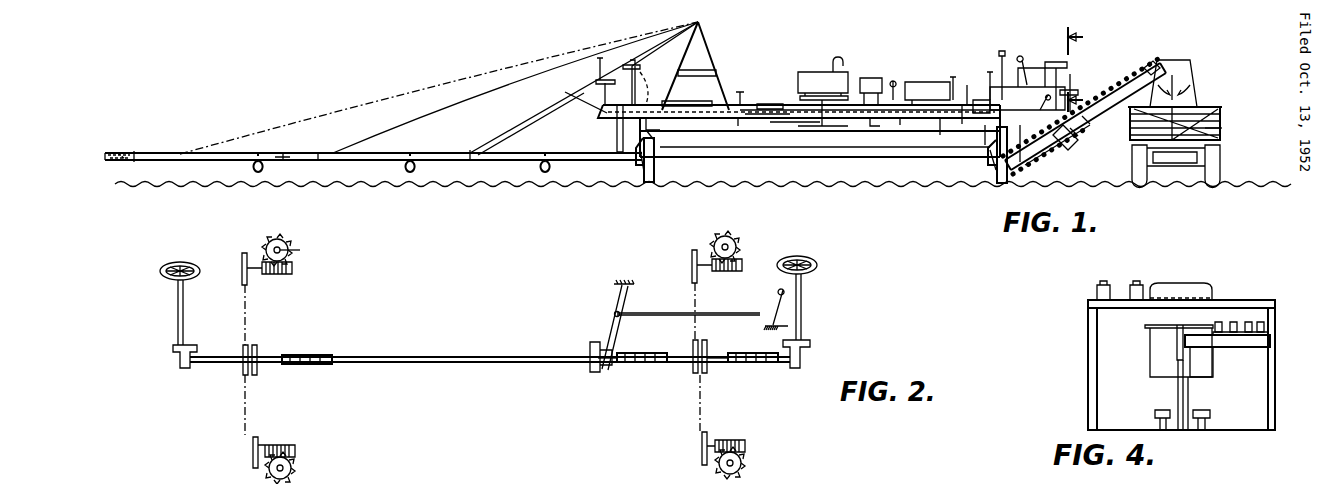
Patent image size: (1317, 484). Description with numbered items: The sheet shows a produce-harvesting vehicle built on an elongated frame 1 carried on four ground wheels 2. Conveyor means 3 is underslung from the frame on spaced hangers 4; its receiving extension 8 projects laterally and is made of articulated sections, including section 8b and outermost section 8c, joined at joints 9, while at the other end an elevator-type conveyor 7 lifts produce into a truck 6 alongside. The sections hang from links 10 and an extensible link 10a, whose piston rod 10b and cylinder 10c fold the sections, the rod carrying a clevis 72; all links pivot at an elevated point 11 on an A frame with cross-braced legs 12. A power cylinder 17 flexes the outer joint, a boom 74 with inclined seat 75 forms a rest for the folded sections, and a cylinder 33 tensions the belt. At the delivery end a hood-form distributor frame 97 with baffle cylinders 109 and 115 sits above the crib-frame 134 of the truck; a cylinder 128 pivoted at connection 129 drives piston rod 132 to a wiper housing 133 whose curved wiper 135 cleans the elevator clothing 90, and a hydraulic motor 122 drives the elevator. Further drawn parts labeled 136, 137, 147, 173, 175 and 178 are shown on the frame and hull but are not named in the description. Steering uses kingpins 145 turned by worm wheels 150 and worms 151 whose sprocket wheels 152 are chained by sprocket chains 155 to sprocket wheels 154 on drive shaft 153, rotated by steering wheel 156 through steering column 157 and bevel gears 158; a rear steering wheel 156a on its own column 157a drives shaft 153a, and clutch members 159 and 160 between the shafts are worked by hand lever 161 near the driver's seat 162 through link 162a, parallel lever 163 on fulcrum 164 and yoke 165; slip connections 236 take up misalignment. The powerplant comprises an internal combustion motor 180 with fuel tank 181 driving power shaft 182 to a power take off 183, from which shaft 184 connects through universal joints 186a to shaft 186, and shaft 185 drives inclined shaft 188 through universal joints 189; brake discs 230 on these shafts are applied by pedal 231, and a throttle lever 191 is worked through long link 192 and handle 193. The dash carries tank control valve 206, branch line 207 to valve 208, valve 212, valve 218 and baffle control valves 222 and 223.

In FIG. 1, the frame 1 is at (706, 157).
In FIG. 1, the ground wheels 2 is at (655, 165).
In FIG. 1, the conveyor means 3 is at (853, 158).
In FIG. 1, the hangers 4 is at (606, 118).
In FIG. 1, the truck 6 is at (1224, 111).
In FIG. 1, the elevator-type conveyor 7 is at (1112, 97).
In FIG. 1, the receiving extension 8 is at (440, 153).
In FIG. 1, the conveyor section 8b is at (326, 161).
In FIG. 1, the outermost section 8c is at (162, 158).
In FIG. 1, the joints 9 is at (266, 154).
In FIG. 1, the stays or links 10 is at (482, 107).
In FIG. 1, the extensible link 10a is at (556, 109).
In FIG. 1, the piston rod 10b is at (520, 131).
In FIG. 1, the cylinder 10c is at (647, 46).
In FIG. 1, the elevated point 11 is at (700, 22).
In FIG. 1, the legs of A frame 12 is at (676, 74).
In FIG. 1, the power cylinder 17 is at (282, 160).
In FIG. 1, the cylinder 33 is at (130, 152).
In FIG. 1, the clevis 72 is at (484, 151).
In FIG. 1, the boom 74 is at (582, 103).
In FIG. 1, the inclined seat 75 is at (580, 96).
In FIG. 1, the clothing 90 is at (1022, 165).
In FIG. 1, the distributor frame 97 is at (1188, 98).
In FIG. 1, the fluid operated cylinder 109 is at (1178, 63).
In FIG. 1, the fluid operated cylinders 115 is at (1222, 127).
In FIG. 1, the motor 122 is at (1148, 63).
In FIG. 1, the fluid-operated cylinder 128 is at (1056, 142).
In FIG. 1, the pivotal connection 129 is at (1027, 86).
In FIG. 1, the piston-rod 132 is at (1073, 150).
In FIG. 1, the wiper-housing 133 is at (1082, 138).
In FIG. 1, the crib-frame 134 is at (1208, 103).
In FIG. 1, the wiper 135 is at (1091, 126).
In FIG. 1, the support 136 is at (940, 140).
In FIG. 1, the bracket 137 is at (656, 126).
In FIG. 2, the king-pin 145 is at (292, 254).
In FIG. 1, the pontoon bracket 147 is at (644, 172).
In FIG. 2, the worm-wheel 150 is at (289, 242).
In FIG. 2, the worm 151 is at (280, 274).
In FIG. 2, the sprocket wheels 152 is at (241, 284).
In FIG. 2, the drive shaft 153 is at (258, 348).
In FIG. 1, the shaft 153a is at (772, 122).
In FIG. 2, the shaft 153a is at (411, 362).
In FIG. 2, the sprocket wheels 154 is at (240, 372).
In FIG. 2, the sprocket chains 155 is at (244, 308).
In FIG. 1, the steering wheel 156 is at (1056, 62).
In FIG. 2, the steering wheel 156 is at (800, 249).
In FIG. 4, the steering wheel 156 is at (1145, 318).
In FIG. 1, the steering wheel 156a is at (630, 64).
In FIG. 2, the steering wheel 156a is at (184, 257).
In FIG. 1, the steering column 157 is at (1072, 78).
In FIG. 2, the steering column 157 is at (803, 311).
In FIG. 4, the steering column 157 is at (1176, 348).
In FIG. 2, the wheel shaft 157a is at (177, 310).
In FIG. 2, the bevel gears 158 is at (802, 361).
In FIG. 1, the clutch member 159 is at (962, 124).
In FIG. 2, the clutch member 159 is at (596, 371).
In FIG. 2, the clutch member 160 is at (612, 372).
In FIG. 1, the hand lever 161 is at (1040, 112).
In FIG. 2, the hand lever 161 is at (786, 304).
In FIG. 1, the driver's seat 162 is at (1001, 52).
In FIG. 4, the driver's seat 162 is at (1176, 338).
In FIG. 2, the link 162a is at (752, 348).
In FIG. 2, the parallel lever 163 is at (612, 315).
In FIG. 2, the fulcrum 164 is at (618, 278).
In FIG. 2, the yoke 165 is at (612, 322).
In FIG. 1, the post 173 is at (616, 140).
In FIG. 1, the post 175 is at (982, 150).
In FIG. 1, the post 178 is at (640, 70).
In FIG. 1, the internal combustion motor 180 is at (927, 82).
In FIG. 1, the fuel tank 181 is at (871, 78).
In FIG. 1, the power-shaft 182 is at (843, 72).
In FIG. 1, the power take off 183 is at (775, 97).
In FIG. 1, the shaft 184 is at (740, 120).
In FIG. 1, the shaft 185 is at (872, 126).
In FIG. 1, the shaft 186 is at (648, 98).
In FIG. 1, the universal joints 186a is at (688, 97).
In FIG. 1, the inclined shaft 188 is at (980, 100).
In FIG. 1, the universal joints 189 is at (967, 85).
In FIG. 1, the throttle lever 191 is at (895, 81).
In FIG. 1, the long link 192 is at (953, 77).
In FIG. 1, the handle 193 is at (1022, 56).
In FIG. 1, the tank control valve 206 is at (808, 72).
In FIG. 4, the tank control valve 206 is at (1258, 333).
In FIG. 1, the branch line 207 is at (823, 124).
In FIG. 4, the 2-way cock or valve 208 is at (1239, 322).
In FIG. 4, the 2-way cock or valve 212 is at (1096, 287).
In FIG. 4, the valve 218 is at (1144, 287).
In FIG. 4, the control valve 222 is at (1241, 347).
In FIG. 4, the control valve 223 is at (1220, 360).
In FIG. 1, the brake discs 230 is at (740, 92).
In FIG. 2, the brake discs 230 is at (751, 363).
In FIG. 1, the pedal 231 is at (1072, 90).
In FIG. 4, the pedal 231 is at (1160, 410).
In FIG. 2, the slip connections 236 is at (290, 366).